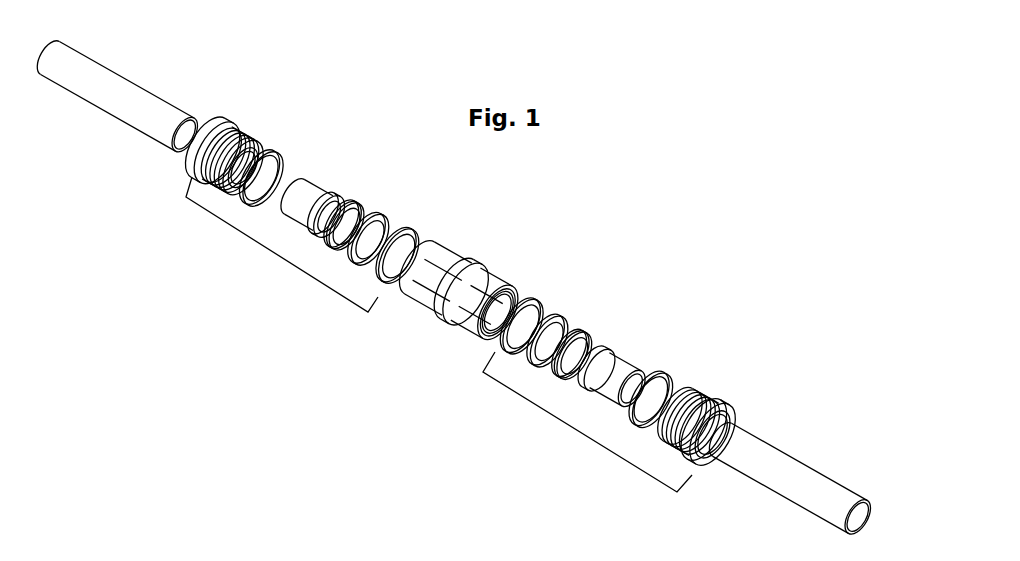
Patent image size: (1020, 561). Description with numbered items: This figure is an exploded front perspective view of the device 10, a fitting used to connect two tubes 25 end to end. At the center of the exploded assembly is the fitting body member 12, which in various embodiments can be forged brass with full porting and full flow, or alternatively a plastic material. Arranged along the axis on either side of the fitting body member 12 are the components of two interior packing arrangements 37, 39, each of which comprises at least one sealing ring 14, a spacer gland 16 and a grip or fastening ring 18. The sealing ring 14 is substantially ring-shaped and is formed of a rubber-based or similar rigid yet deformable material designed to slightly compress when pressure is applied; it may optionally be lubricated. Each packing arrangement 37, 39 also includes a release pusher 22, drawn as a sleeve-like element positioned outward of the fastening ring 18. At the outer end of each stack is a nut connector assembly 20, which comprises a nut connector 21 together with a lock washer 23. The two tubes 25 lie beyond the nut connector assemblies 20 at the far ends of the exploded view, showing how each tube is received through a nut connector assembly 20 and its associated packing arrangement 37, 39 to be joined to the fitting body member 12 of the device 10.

The device 10 is at (733, 232).
The fitting body member 12 is at (480, 265).
The sealing ring 14 is at (405, 223).
The spacer gland 16 is at (377, 217).
The fastening ring 18 is at (355, 197).
The nut connector assembly 20 is at (288, 115).
The nut connector 21 is at (233, 123).
The release pusher 22 is at (313, 182).
The lock washer 23 is at (280, 153).
The tube 25 is at (125, 87).
The interior packing arrangement 37 is at (272, 256).
The interior packing arrangement 39 is at (580, 430).